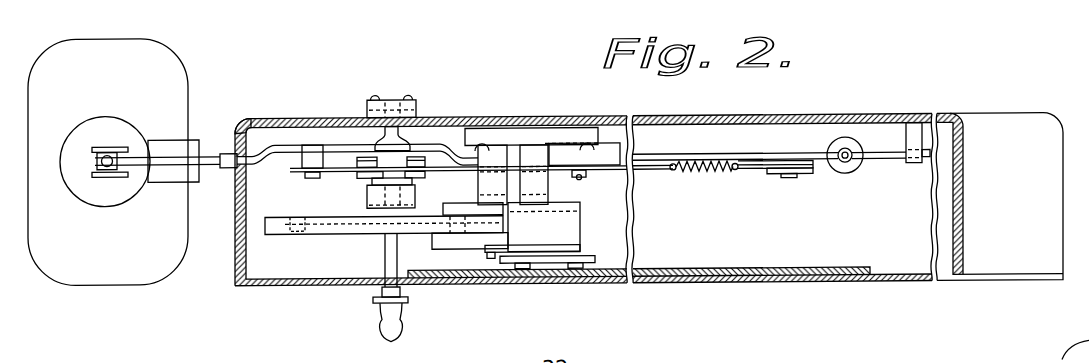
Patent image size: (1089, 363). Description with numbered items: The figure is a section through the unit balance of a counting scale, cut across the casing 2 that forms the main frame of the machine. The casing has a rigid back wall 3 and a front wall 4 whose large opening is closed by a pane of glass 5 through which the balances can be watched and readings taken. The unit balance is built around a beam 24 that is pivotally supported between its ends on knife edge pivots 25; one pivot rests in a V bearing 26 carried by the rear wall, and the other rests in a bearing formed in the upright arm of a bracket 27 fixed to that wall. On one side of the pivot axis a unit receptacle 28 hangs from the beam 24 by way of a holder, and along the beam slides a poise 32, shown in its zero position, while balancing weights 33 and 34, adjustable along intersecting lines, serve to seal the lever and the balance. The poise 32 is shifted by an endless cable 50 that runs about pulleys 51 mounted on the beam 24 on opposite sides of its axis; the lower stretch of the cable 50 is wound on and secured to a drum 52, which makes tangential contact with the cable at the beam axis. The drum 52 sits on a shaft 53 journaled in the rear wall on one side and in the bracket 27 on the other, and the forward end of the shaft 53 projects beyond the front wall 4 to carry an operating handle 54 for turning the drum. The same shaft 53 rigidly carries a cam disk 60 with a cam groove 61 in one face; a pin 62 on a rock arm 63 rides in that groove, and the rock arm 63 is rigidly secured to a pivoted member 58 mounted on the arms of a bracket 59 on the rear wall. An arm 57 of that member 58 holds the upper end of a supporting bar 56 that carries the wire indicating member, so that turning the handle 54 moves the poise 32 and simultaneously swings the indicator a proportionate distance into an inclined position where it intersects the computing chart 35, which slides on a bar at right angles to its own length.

The casing 2 is at (235, 221).
The back wall 3 is at (731, 117).
The front wall 4 is at (307, 283).
The pane of glass 5 is at (708, 273).
The beam 24 is at (212, 151).
The knife edge pivots 25 is at (368, 109).
The V bearing 26 is at (413, 106).
The bracket 27 is at (368, 200).
The unit receptacle 28 is at (108, 162).
The poise 32 is at (631, 148).
The balancing weight 33 is at (175, 137).
The balancing weight 34 is at (849, 175).
The computing chart 35 is at (466, 248).
The cable 50 is at (440, 170).
The pulleys 51 is at (308, 173).
The drum 52 is at (372, 186).
The shaft 53 is at (386, 260).
The operating handle 54 is at (386, 322).
The supporting bar 56 is at (560, 263).
The arm 57 is at (522, 246).
The pivoted member 58 is at (531, 166).
The bracket 59 is at (570, 174).
The cam disk 60 is at (332, 233).
The cam groove 61 is at (298, 229).
The pin 62 is at (505, 226).
The rock arm 63 is at (448, 204).